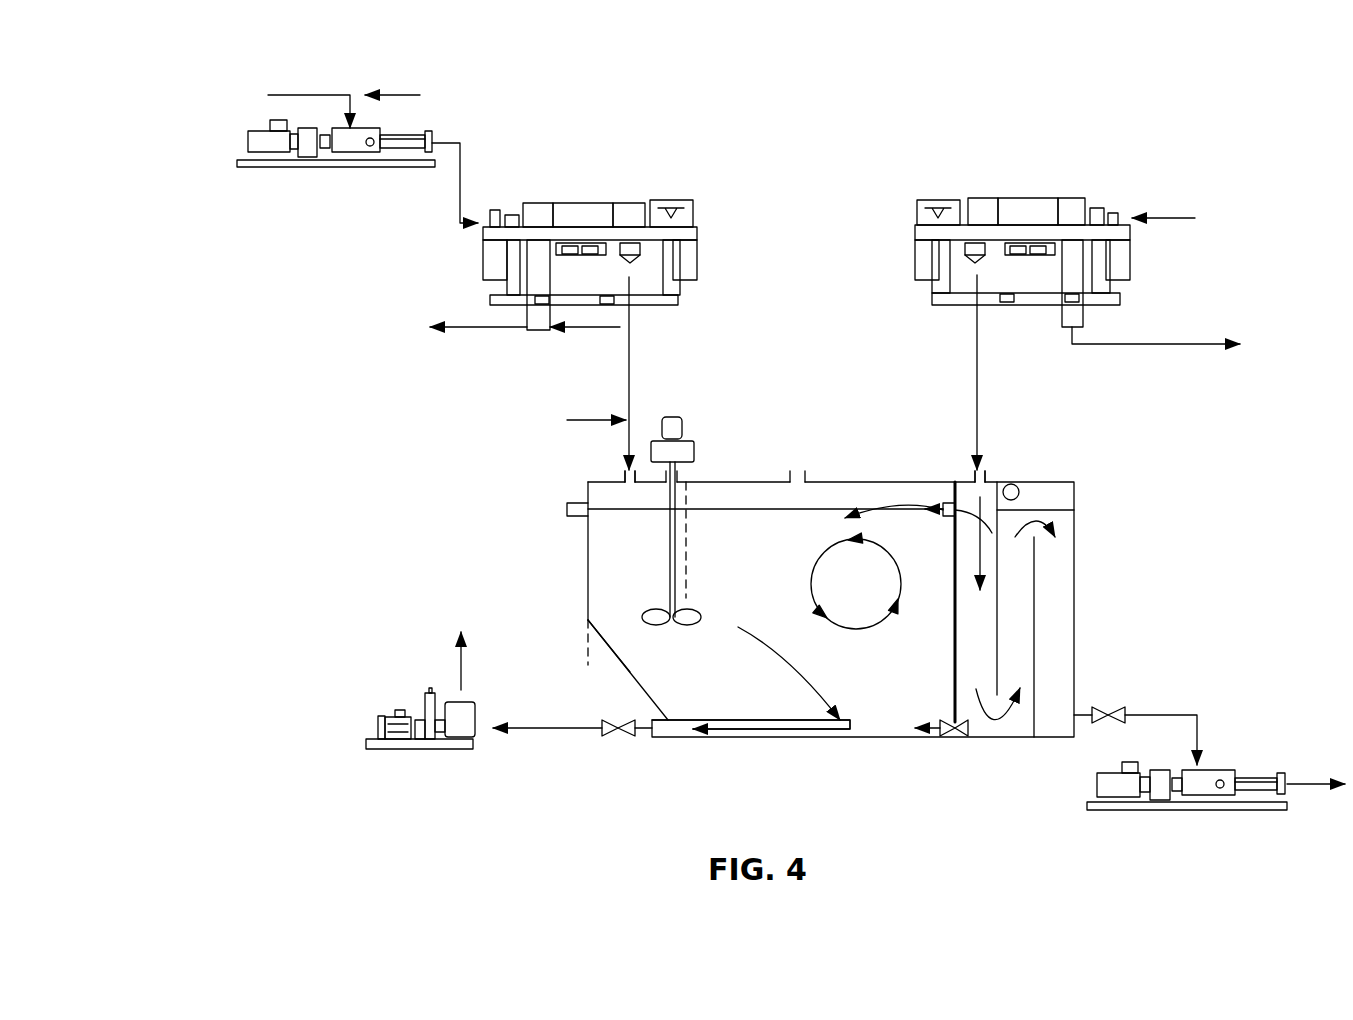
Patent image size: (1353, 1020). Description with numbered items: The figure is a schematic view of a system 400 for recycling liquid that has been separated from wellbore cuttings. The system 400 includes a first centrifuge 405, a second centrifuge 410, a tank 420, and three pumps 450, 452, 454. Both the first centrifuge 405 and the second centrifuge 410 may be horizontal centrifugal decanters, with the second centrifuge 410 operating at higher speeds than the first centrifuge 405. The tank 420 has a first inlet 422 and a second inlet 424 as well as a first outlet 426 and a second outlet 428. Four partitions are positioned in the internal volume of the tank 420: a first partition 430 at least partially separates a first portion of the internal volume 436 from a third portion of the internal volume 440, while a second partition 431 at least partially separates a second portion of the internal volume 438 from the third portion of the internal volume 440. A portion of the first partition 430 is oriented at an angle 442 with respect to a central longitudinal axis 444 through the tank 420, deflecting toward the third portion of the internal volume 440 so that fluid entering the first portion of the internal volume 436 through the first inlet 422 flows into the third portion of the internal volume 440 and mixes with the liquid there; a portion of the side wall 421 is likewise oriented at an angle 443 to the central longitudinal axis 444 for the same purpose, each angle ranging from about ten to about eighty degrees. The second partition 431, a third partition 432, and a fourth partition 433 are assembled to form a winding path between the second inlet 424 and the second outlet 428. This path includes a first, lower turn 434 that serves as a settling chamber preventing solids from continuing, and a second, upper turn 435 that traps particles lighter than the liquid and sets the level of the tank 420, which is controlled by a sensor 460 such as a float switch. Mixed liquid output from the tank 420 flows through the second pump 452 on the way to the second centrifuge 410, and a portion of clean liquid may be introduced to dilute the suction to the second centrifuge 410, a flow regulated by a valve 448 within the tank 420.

The system 400 is at (814, 88).
The first centrifuge 405 is at (580, 210).
The second centrifuge 410 is at (1020, 198).
The tank 420 is at (587, 556).
The side wall 421 is at (645, 692).
The first inlet 422 is at (622, 476).
The second inlet 424 is at (973, 478).
The first outlet 426 is at (665, 740).
The second outlet 428 is at (1085, 713).
The first partition 430 is at (683, 512).
The second partition 431 is at (955, 632).
The third partition 432 is at (997, 650).
The fourth partition 433 is at (1036, 605).
The first, lower turn 434 is at (1003, 740).
The second, upper turn 435 is at (1062, 530).
The first portion of the internal volume 436 is at (650, 590).
The second portion of the internal volume 438 is at (987, 605).
The third portion of the internal volume 440 is at (880, 597).
The angle 442 is at (740, 565).
The angle 443 is at (632, 675).
The central longitudinal axis 444 is at (690, 596).
The valve 448 is at (955, 732).
The pump 450 is at (248, 141).
The second pump 452 is at (378, 729).
The pump 454 is at (1223, 770).
The sensor 460 is at (1076, 496).